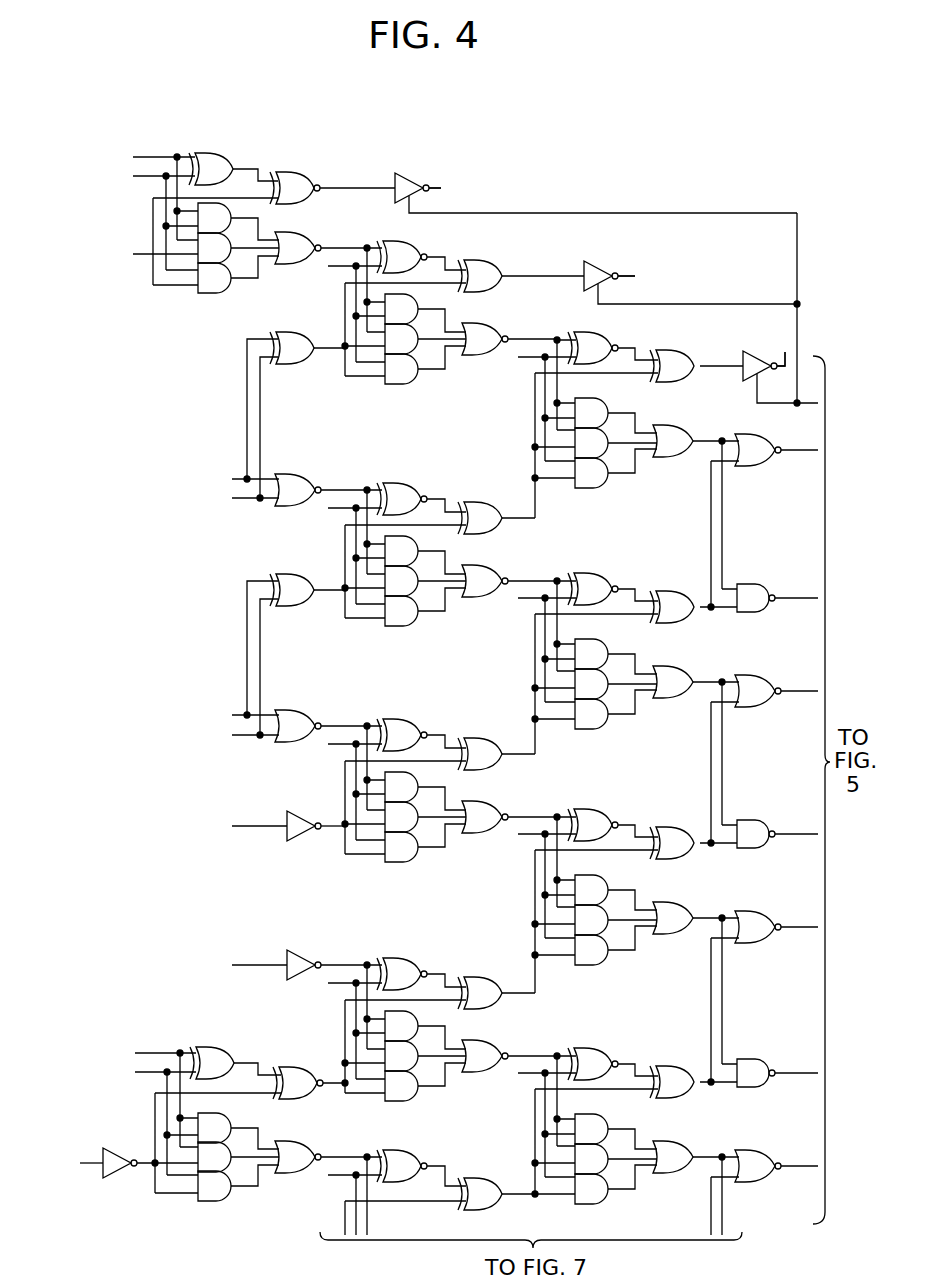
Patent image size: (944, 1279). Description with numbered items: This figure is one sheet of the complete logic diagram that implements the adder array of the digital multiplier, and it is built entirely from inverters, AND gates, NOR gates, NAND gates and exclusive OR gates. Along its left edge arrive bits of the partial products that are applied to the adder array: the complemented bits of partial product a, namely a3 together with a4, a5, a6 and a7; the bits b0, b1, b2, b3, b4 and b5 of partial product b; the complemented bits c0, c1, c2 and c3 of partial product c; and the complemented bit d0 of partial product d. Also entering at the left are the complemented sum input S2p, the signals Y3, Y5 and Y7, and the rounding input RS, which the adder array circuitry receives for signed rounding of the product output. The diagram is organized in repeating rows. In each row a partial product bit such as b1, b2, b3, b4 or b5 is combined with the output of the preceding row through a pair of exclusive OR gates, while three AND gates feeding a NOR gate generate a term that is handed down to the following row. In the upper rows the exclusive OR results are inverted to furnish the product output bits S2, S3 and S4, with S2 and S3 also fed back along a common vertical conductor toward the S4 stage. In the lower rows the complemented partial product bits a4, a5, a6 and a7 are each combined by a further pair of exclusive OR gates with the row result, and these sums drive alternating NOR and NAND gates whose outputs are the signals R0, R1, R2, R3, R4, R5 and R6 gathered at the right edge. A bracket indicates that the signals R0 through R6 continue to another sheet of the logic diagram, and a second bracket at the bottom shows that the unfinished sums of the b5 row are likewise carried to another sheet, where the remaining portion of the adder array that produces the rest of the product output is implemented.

The complemented input signal S2' S2p is at (134, 132).
The partial product b bit b0 is at (127, 172).
The input signal Y3 (complemented) Y3 is at (126, 239).
The partial product b bit b1 is at (342, 281).
The partial product a bit a3 is at (222, 452).
The partial product c bit c3 is at (224, 488).
The partial product b bit b2 is at (342, 519).
The input signal Y5 is at (237, 701).
The partial product c bit c0 is at (222, 733).
The partial product b bit b3 is at (342, 761).
The partial product c bit c1 is at (222, 808).
The input signal Y7 (complemented) Y7 is at (224, 952).
The partial product b bit b4 is at (342, 998).
The partial product d bit d0 is at (125, 1027).
The partial product c bit c2 is at (125, 1065).
The rounding input RS is at (74, 1166).
The partial product b bit b5 is at (342, 1186).
The product output bit S2 is at (463, 193).
The product output bit S3 is at (648, 280).
The product output bit S4 is at (772, 338).
The partial product a bit a4 is at (513, 357).
The partial product a bit a5 is at (513, 598).
The partial product a bit a6 is at (513, 834).
The partial product a bit a7 is at (513, 1073).
The output signal R0 is at (799, 472).
The output signal R1 is at (796, 618).
The output signal R2 is at (799, 713).
The output signal R3 is at (796, 854).
The output signal R4 is at (799, 949).
The output signal R5 is at (796, 1093).
The output signal R6 is at (799, 1188).